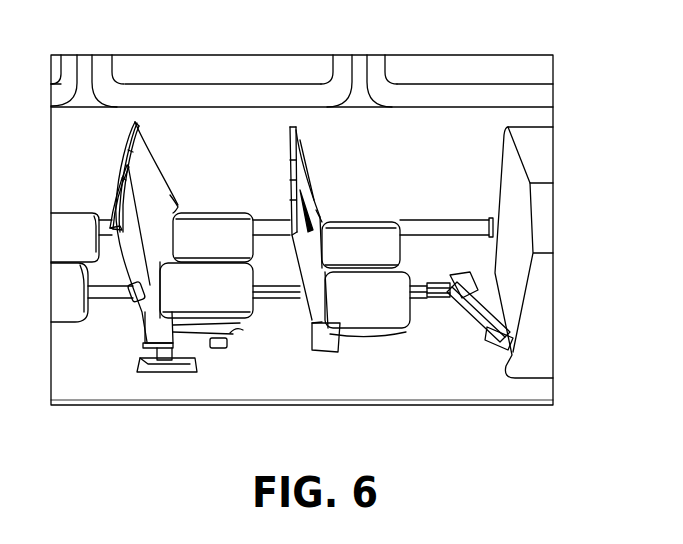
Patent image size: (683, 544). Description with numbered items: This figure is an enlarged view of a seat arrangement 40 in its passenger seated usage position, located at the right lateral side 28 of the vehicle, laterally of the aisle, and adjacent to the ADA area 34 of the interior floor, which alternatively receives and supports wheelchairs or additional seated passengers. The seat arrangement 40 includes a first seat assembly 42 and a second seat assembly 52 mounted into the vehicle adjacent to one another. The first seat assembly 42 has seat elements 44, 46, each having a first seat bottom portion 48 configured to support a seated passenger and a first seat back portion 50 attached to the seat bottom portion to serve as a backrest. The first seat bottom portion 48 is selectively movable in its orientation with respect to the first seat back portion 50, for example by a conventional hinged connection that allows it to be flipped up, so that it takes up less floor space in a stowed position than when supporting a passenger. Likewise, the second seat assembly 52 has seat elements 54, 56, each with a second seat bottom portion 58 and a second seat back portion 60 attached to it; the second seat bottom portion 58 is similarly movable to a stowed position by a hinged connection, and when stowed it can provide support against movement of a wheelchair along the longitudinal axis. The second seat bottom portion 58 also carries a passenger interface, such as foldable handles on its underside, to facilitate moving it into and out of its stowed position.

The right lateral side 28 is at (431, 194).
The ADA area 34 is at (371, 381).
The seat arrangement 40 is at (480, 113).
The first seat assembly 42 is at (359, 113).
The seat element 44 is at (316, 331).
The seat element 46 is at (334, 199).
The first seat bottom portion 48 is at (352, 252).
The first seat back portion 50 is at (308, 190).
The second seat assembly 52 is at (174, 123).
The seat element 54 is at (139, 309).
The seat element 56 is at (187, 196).
The second seat bottom portion 58 is at (192, 245).
The second seat back portion 60 is at (136, 195).